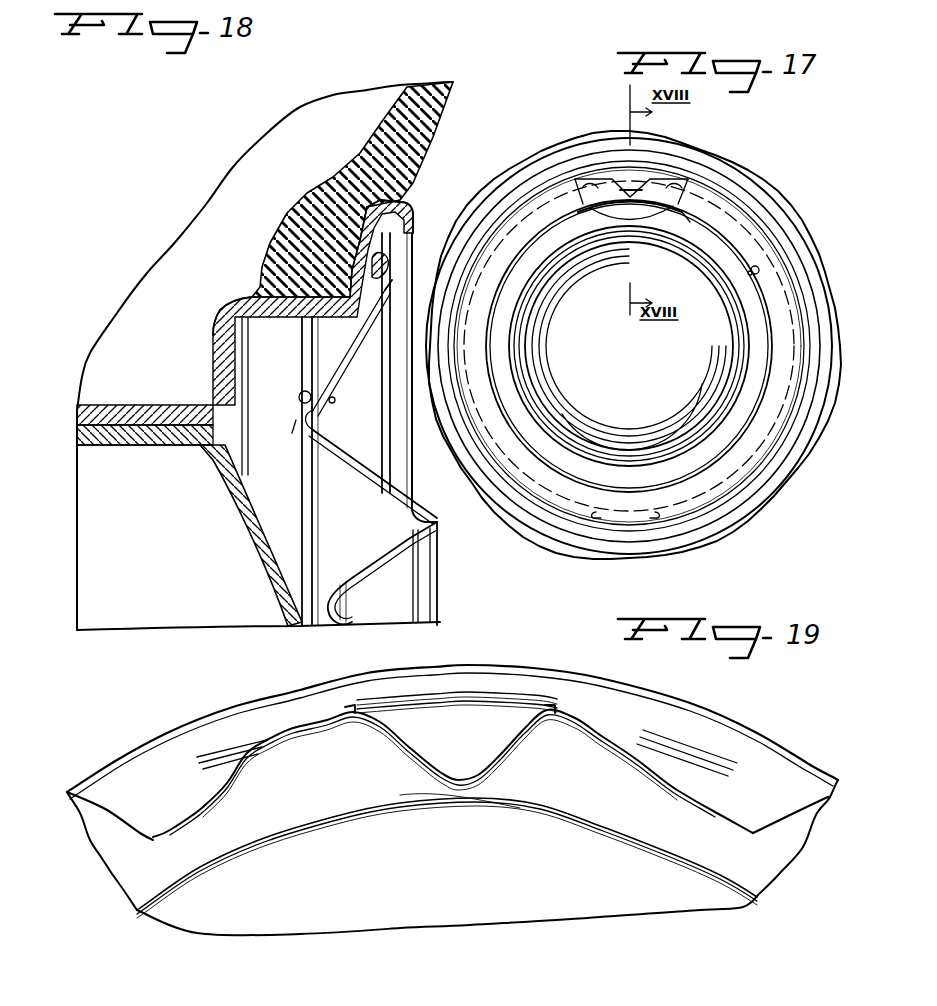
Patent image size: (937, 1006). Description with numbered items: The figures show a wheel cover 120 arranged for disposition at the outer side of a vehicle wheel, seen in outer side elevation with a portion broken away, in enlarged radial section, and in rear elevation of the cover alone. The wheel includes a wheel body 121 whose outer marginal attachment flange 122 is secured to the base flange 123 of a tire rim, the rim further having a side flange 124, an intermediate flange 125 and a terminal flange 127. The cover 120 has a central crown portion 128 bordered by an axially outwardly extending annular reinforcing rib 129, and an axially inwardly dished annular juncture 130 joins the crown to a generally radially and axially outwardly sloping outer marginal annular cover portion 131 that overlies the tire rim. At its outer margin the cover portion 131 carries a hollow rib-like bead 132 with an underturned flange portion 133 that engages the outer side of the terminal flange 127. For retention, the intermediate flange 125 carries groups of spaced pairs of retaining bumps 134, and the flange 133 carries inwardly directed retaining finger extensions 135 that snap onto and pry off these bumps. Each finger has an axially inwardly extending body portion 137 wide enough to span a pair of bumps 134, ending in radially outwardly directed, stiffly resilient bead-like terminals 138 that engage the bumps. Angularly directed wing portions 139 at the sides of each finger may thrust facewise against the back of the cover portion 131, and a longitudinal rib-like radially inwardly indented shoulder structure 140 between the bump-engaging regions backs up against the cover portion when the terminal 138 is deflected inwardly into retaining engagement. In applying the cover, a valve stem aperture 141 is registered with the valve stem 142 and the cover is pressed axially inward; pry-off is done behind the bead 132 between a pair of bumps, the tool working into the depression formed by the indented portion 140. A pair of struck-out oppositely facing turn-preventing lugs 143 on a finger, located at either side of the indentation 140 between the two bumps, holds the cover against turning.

In FIG. 18, the cover 120 is at (453, 596).
In FIG. 17, the cover 120 is at (770, 483).
In FIG. 19, the cover 120 is at (167, 932).
In FIG. 18, the wheel body 121 is at (270, 540).
In FIG. 18, the outer marginal attachment flange 122 is at (150, 440).
In FIG. 18, the base flange 123 is at (157, 405).
In FIG. 18, the side flange 124 is at (225, 352).
In FIG. 18, the intermediate flange 125 is at (283, 318).
In FIG. 18, the terminal flange 127 is at (412, 205).
In FIG. 17, the central crown portion 128 is at (664, 383).
In FIG. 18, the annular reinforcing rib 129 is at (440, 553).
In FIG. 18, the annular juncture 130 is at (314, 429).
In FIG. 19, the annular juncture 130 is at (348, 823).
In FIG. 18, the outer marginal annular cover portion 131 is at (380, 400).
In FIG. 17, the outer marginal annular cover portion 131 is at (718, 492).
In FIG. 19, the outer marginal annular cover portion 131 is at (638, 815).
In FIG. 18, the bead 132 is at (395, 250).
In FIG. 17, the bead 132 is at (629, 346).
In FIG. 19, the bead 132 is at (768, 736).
In FIG. 18, the underturned flange portion 133 is at (386, 268).
In FIG. 17, the underturned flange portion 133 is at (629, 346).
In FIG. 19, the underturned flange portion 133 is at (715, 692).
In FIG. 18, the retaining bumps 134 is at (335, 398).
In FIG. 17, the retaining bumps 134 is at (600, 181).
In FIG. 18, the retaining finger extensions 135 is at (292, 386).
In FIG. 17, the retaining finger extensions 135 is at (594, 212).
In FIG. 19, the retaining finger extensions 135 is at (497, 809).
In FIG. 18, the body portion 137 is at (378, 298).
In FIG. 17, the body portion 137 is at (680, 216).
In FIG. 19, the body portion 137 is at (520, 712).
In FIG. 18, the terminals 138 is at (293, 412).
In FIG. 19, the terminals 138 is at (330, 728).
In FIG. 19, the wing portions 139 is at (172, 812).
In FIG. 18, the shoulder structure 140 is at (330, 378).
In FIG. 17, the shoulder structure 140 is at (632, 195).
In FIG. 19, the shoulder structure 140 is at (458, 790).
In FIG. 17, the valve stem aperture 141 is at (757, 266).
In FIG. 17, the valve stem 142 is at (753, 271).
In FIG. 18, the turn-preventing lugs 143 is at (372, 312).
In FIG. 17, the turn-preventing lugs 143 is at (646, 190).
In FIG. 19, the turn-preventing lugs 143 is at (356, 705).